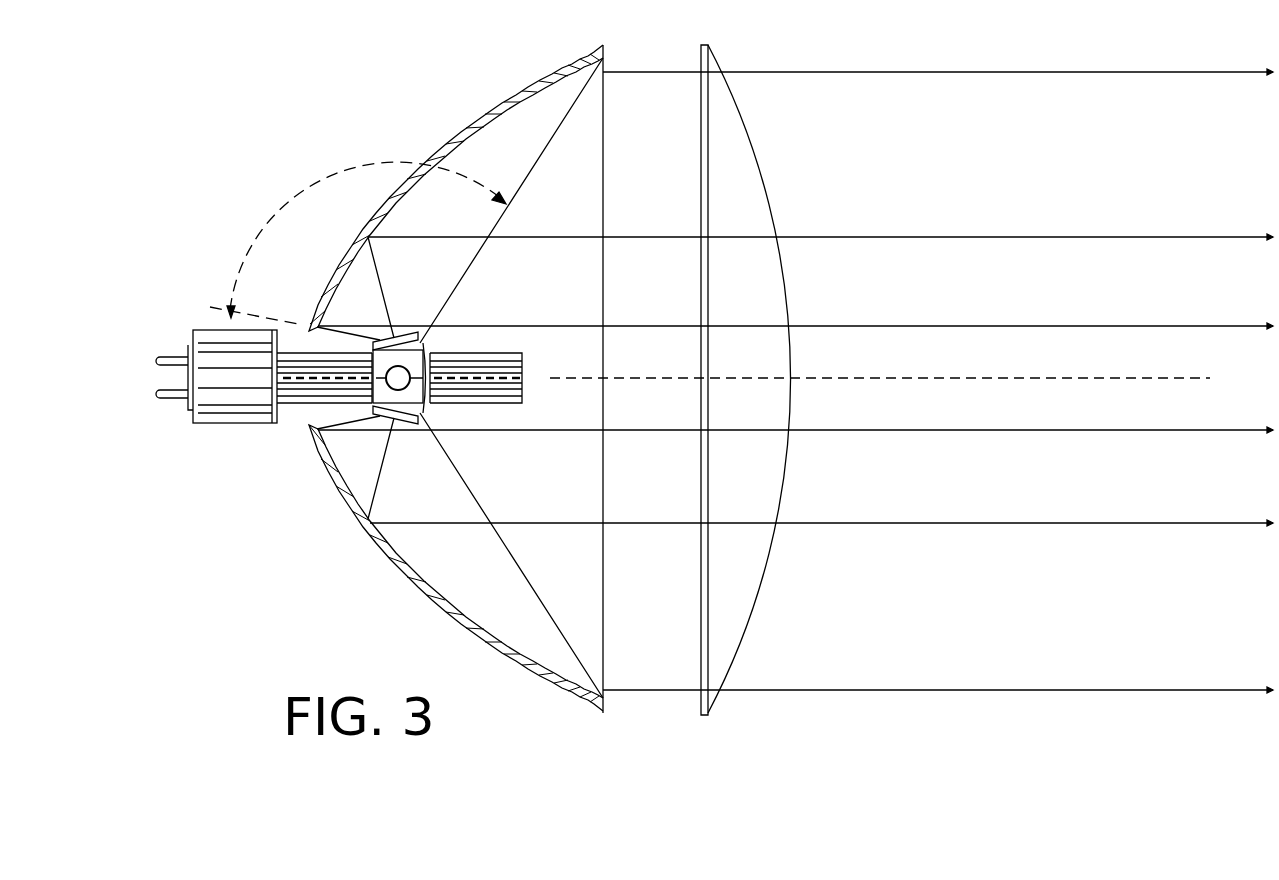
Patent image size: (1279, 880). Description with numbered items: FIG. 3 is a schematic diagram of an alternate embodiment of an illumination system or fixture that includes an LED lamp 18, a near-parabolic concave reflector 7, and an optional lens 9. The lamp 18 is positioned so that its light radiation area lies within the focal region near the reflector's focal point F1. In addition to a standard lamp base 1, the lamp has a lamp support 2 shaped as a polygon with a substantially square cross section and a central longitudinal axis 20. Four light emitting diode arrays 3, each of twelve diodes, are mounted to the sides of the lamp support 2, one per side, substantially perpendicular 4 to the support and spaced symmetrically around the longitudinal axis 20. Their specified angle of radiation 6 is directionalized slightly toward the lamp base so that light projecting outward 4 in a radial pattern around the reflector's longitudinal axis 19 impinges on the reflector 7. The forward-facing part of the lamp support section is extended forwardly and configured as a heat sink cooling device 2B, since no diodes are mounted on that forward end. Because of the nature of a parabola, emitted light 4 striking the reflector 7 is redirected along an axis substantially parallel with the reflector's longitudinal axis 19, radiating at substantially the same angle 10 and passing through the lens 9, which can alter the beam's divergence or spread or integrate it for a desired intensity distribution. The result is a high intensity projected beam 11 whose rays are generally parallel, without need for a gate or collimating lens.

The lamp base 1 is at (212, 367).
The lamp support 2 is at (265, 452).
The heat sink cooling device 2B is at (512, 378).
The light emitting diode arrays 3 is at (380, 417).
The outward light radiation direction 4 is at (382, 287).
The angle of light radiation 6 is at (358, 243).
The reflector 7 is at (480, 116).
The lens 9 is at (763, 195).
The angle of radiated light 10 is at (623, 237).
The projected beam 11 is at (985, 325).
The LED lamp 18 is at (270, 380).
The longitudinal axis of the reflector 19 is at (865, 380).
The longitudinal axis of the lamp support 20 is at (315, 378).
The focal point F1 is at (398, 378).